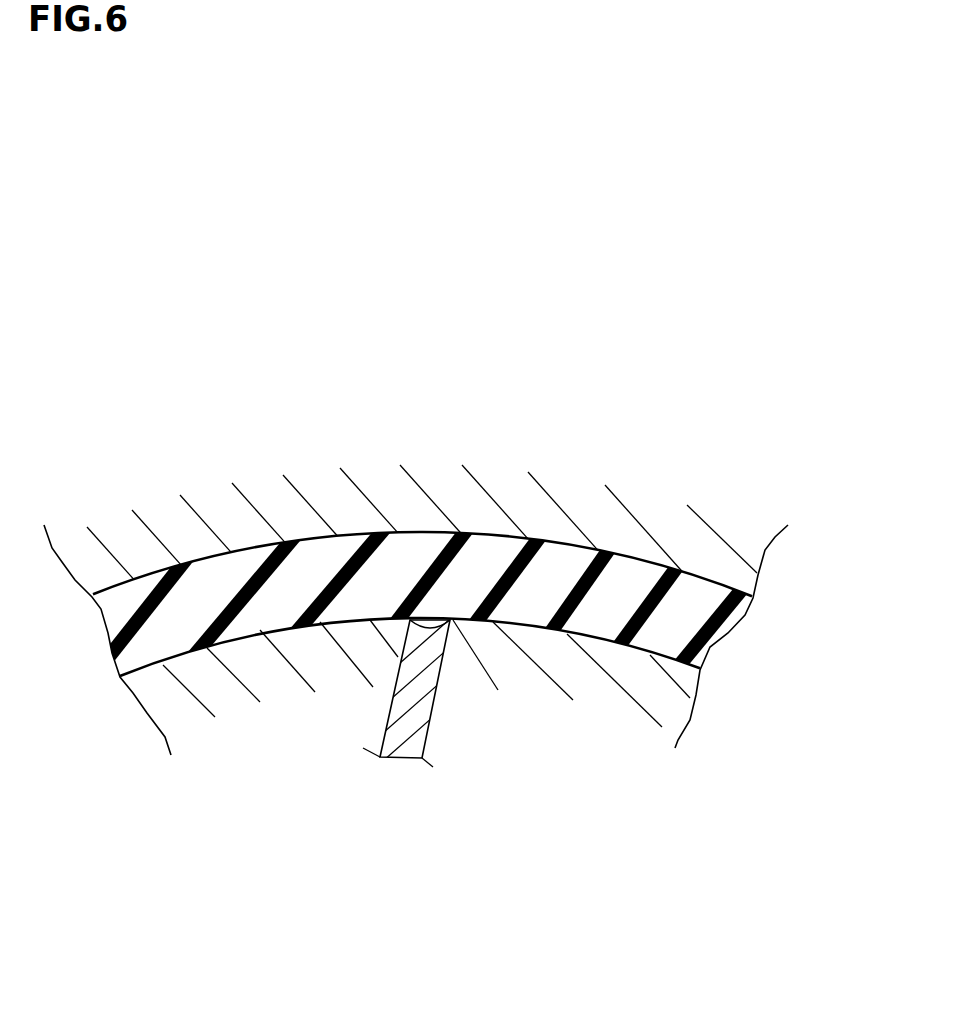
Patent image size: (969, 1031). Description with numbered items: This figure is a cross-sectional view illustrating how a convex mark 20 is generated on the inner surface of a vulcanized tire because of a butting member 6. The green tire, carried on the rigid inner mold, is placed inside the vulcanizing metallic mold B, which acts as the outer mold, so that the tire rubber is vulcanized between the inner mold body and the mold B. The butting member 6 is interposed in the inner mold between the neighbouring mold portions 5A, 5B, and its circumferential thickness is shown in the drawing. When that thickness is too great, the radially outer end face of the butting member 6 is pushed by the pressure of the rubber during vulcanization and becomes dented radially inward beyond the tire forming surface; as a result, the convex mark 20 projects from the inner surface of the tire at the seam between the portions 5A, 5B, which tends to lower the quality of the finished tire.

The vulcanizing metallic mold B is at (568, 492).
The first tread portion 5A is at (590, 742).
The second tread portion 5B is at (262, 743).
The convex mark 20 is at (430, 622).
The butting member 6 is at (410, 723).